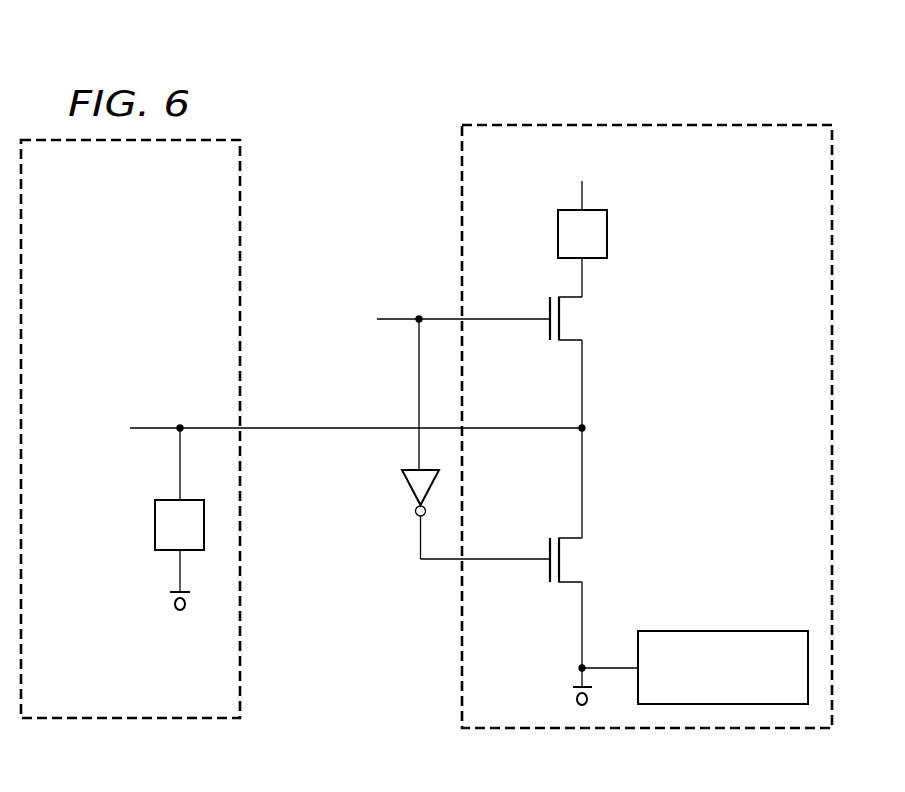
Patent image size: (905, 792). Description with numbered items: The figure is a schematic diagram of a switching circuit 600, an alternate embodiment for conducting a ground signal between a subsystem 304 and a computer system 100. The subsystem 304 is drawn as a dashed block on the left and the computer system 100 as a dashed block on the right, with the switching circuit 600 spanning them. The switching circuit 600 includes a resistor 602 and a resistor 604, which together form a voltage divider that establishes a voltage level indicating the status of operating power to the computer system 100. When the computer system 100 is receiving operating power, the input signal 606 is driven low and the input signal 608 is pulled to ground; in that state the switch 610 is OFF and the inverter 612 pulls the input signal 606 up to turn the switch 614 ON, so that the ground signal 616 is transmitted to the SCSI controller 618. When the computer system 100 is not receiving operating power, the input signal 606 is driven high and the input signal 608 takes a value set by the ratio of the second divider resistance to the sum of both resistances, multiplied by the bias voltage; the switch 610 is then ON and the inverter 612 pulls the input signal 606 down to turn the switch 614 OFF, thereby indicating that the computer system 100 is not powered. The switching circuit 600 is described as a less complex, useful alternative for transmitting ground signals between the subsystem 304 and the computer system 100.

The switching circuit 600 is at (645, 88).
The subsystem 304 is at (110, 306).
The computer system 100 is at (683, 449).
The resistor 602 is at (607, 227).
The resistor 604 is at (155, 532).
The input signal 606 is at (400, 314).
The input signal 608 is at (153, 424).
The switch 610 is at (548, 304).
The inverter 612 is at (405, 489).
The switch 614 is at (548, 572).
The ground signal 616 is at (330, 397).
The SCSI controller 618 is at (738, 630).